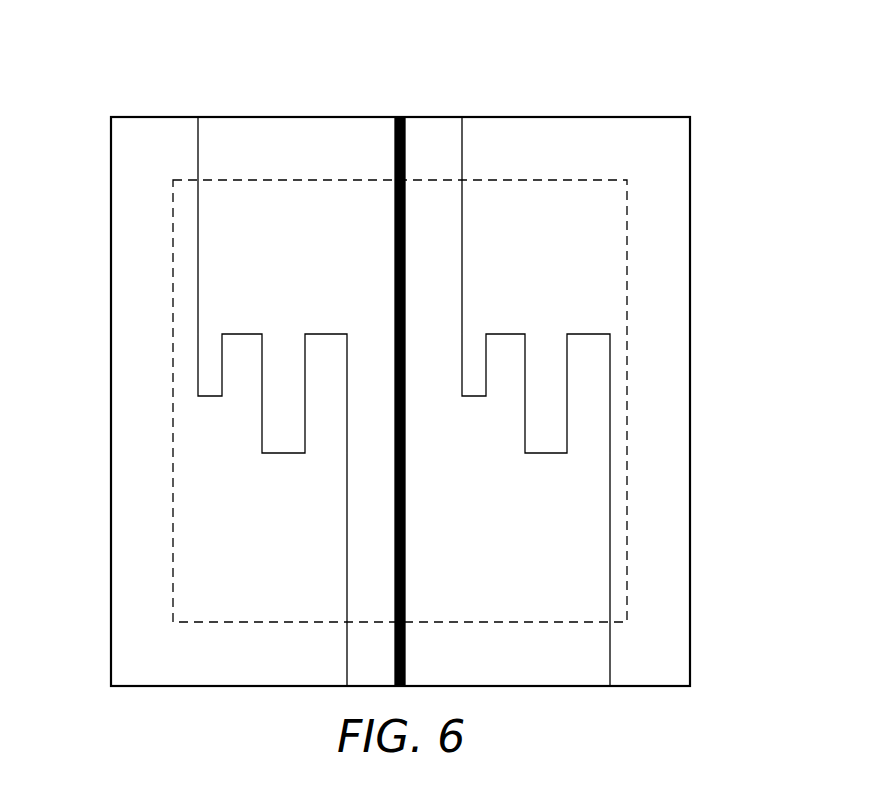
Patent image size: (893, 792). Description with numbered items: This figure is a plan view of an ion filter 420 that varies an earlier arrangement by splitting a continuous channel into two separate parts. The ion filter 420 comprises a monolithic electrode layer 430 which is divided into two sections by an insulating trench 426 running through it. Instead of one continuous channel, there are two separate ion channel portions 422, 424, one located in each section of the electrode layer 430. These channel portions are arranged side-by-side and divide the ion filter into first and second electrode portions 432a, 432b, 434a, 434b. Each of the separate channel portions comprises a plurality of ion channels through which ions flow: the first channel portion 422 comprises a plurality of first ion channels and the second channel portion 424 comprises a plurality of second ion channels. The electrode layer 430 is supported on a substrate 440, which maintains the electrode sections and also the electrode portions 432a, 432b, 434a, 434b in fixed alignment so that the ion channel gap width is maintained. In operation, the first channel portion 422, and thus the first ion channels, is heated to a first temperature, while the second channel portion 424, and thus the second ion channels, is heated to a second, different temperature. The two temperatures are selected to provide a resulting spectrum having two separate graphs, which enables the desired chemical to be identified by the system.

The ion filter 420 is at (711, 106).
The monolithic electrode layer 430 is at (111, 134).
The substrate 440 is at (627, 240).
The insulating trench 426 is at (395, 251).
The first ion channel portion 422 is at (198, 386).
The second ion channel portion 424 is at (610, 372).
The second electrode portion 434a is at (265, 210).
The second electrode portion 434b is at (535, 210).
The first electrode portion 432a is at (199, 595).
The first electrode portion 432b is at (535, 605).